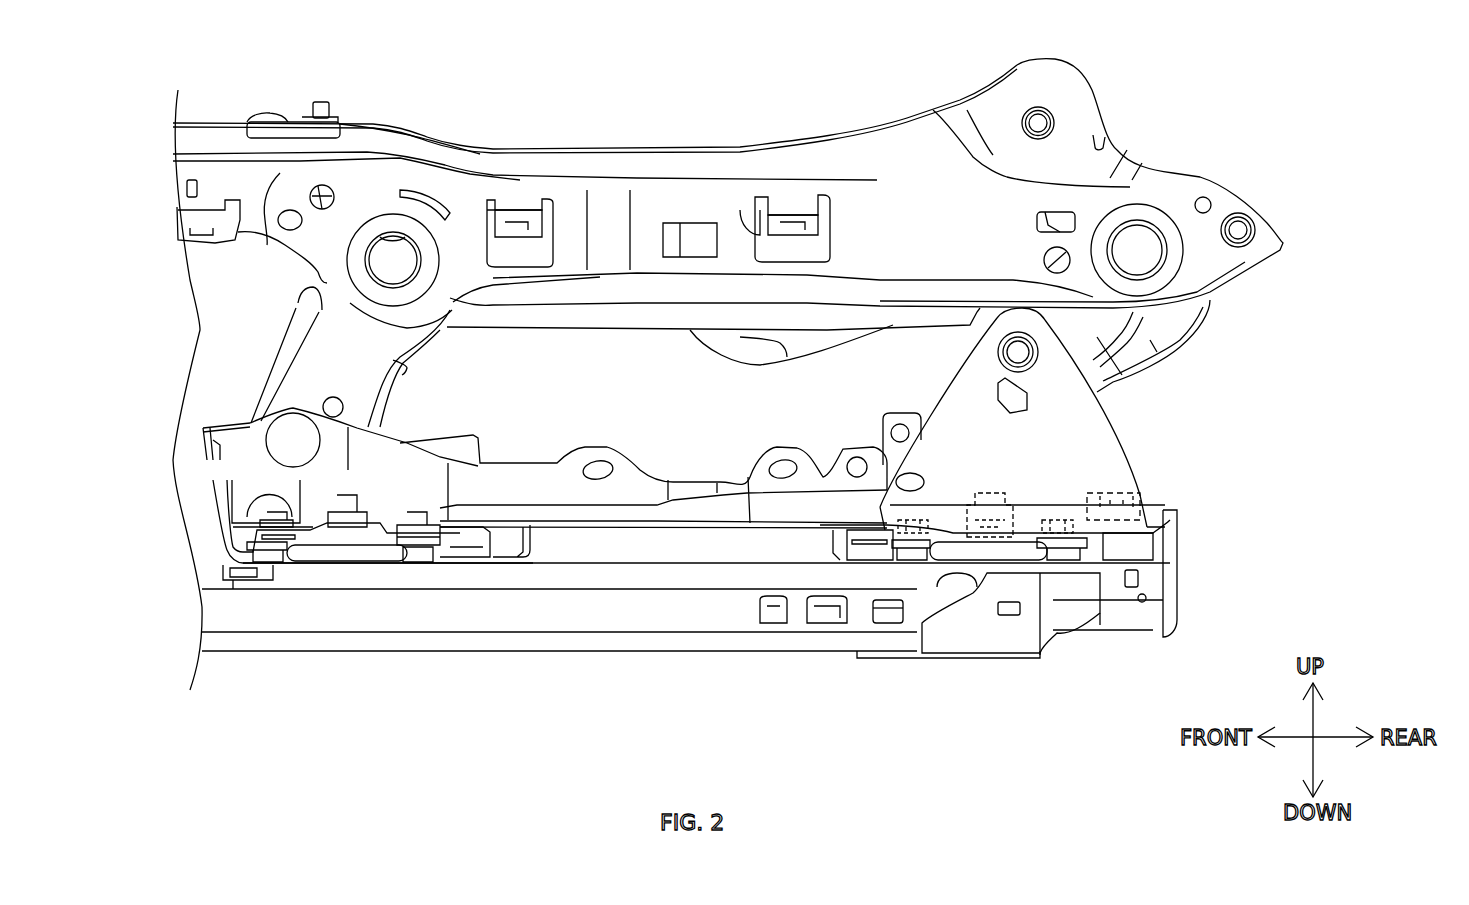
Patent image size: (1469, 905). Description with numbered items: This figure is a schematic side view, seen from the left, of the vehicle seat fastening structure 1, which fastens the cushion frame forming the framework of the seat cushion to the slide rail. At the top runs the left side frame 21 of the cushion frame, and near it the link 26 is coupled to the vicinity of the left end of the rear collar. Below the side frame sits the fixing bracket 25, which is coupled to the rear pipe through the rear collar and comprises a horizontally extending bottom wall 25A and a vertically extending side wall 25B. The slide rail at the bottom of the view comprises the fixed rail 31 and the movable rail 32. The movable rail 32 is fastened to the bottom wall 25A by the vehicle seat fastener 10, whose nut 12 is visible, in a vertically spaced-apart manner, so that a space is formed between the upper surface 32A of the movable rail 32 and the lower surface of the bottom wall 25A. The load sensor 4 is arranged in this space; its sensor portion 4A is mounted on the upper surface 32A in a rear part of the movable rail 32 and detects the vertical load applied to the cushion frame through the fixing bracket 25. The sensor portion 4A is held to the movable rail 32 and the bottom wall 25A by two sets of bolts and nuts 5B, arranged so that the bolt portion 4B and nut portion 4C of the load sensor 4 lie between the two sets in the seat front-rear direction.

The vehicle seat fastening structure 1 is at (1313, 467).
The load sensor 4 is at (1033, 560).
The sensor portion 4A is at (997, 560).
The bolt portion 4B is at (1027, 560).
The nut portion 4C is at (950, 560).
The nut 5B is at (910, 560).
The vehicle seat fastener 10 is at (1150, 470).
The nut 12 is at (1123, 547).
The side frame 21 is at (910, 147).
The fixing bracket 25 is at (917, 390).
The bottom wall 25A is at (747, 503).
The side wall 25B is at (873, 457).
The link 26 is at (1137, 375).
The fixed rail 31 is at (663, 623).
The movable rail 32 is at (1150, 580).
The upper surface 32A is at (822, 562).